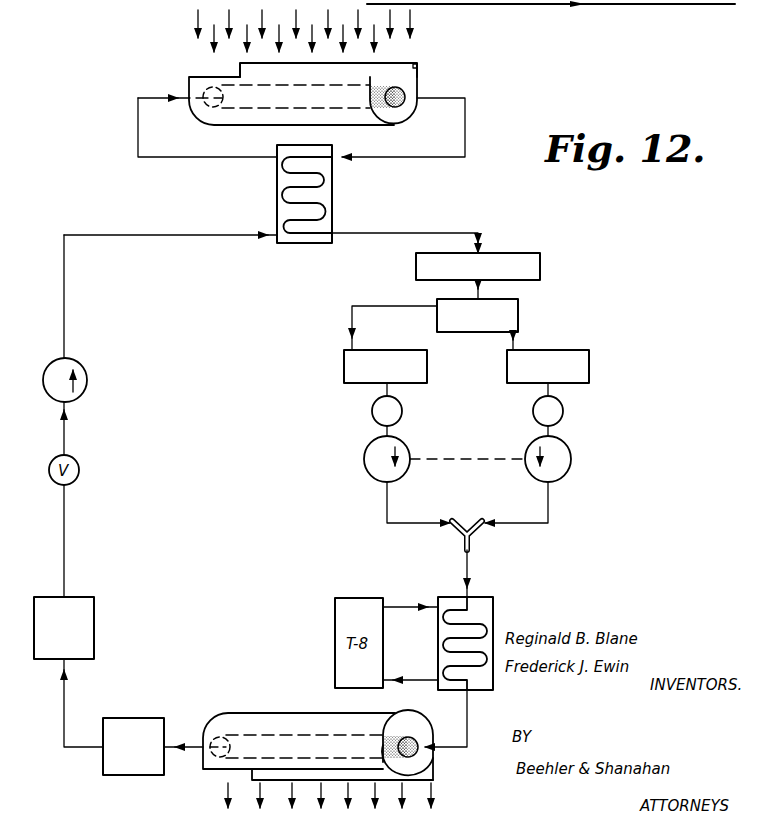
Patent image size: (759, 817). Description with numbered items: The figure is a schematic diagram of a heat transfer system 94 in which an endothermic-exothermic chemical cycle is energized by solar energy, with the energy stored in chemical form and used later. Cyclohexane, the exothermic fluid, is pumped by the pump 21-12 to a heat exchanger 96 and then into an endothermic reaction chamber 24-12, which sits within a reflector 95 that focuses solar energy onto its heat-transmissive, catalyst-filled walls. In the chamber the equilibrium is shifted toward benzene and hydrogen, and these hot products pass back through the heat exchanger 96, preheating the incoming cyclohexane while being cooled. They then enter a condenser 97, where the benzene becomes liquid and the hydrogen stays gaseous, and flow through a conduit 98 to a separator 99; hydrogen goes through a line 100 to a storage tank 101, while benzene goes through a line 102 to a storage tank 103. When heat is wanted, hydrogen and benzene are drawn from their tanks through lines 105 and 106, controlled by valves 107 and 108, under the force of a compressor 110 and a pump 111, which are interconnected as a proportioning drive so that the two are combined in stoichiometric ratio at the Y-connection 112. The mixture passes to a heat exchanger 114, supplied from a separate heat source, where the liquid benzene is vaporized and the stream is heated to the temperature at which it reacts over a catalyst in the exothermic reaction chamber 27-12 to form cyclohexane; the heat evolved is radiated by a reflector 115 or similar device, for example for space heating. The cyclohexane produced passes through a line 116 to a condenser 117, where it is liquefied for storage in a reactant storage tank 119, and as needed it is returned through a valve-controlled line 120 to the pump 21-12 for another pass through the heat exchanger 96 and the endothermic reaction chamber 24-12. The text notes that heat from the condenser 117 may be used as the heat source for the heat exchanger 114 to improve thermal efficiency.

The system 94 is at (596, 244).
The reflector 95 is at (417, 68).
The endothermic reaction chamber 24-12 is at (401, 91).
The heat exchanger 96 is at (332, 201).
The condenser 97 is at (518, 252).
The conduit 98 is at (483, 282).
The separator 99 is at (519, 316).
The line 100 is at (376, 307).
The storage tank 101 is at (418, 383).
The line 102 is at (518, 341).
The storage tank 103 is at (590, 351).
The line 105 is at (384, 388).
The line 106 is at (550, 388).
The valve 107 is at (399, 420).
The valve 108 is at (537, 421).
The compressor 110 is at (372, 482).
The pump 111 is at (563, 478).
The Y-connection 112 is at (480, 532).
The heat exchanger 114 is at (446, 597).
The reflector 115 is at (213, 765).
The line 116 is at (191, 742).
The condenser 117 is at (128, 718).
The reactant storage tank 119 is at (94, 617).
The valve-controlled line 120 is at (64, 530).
The pump 21-12 is at (87, 380).
The exothermic reaction chamber 27-12 is at (433, 771).